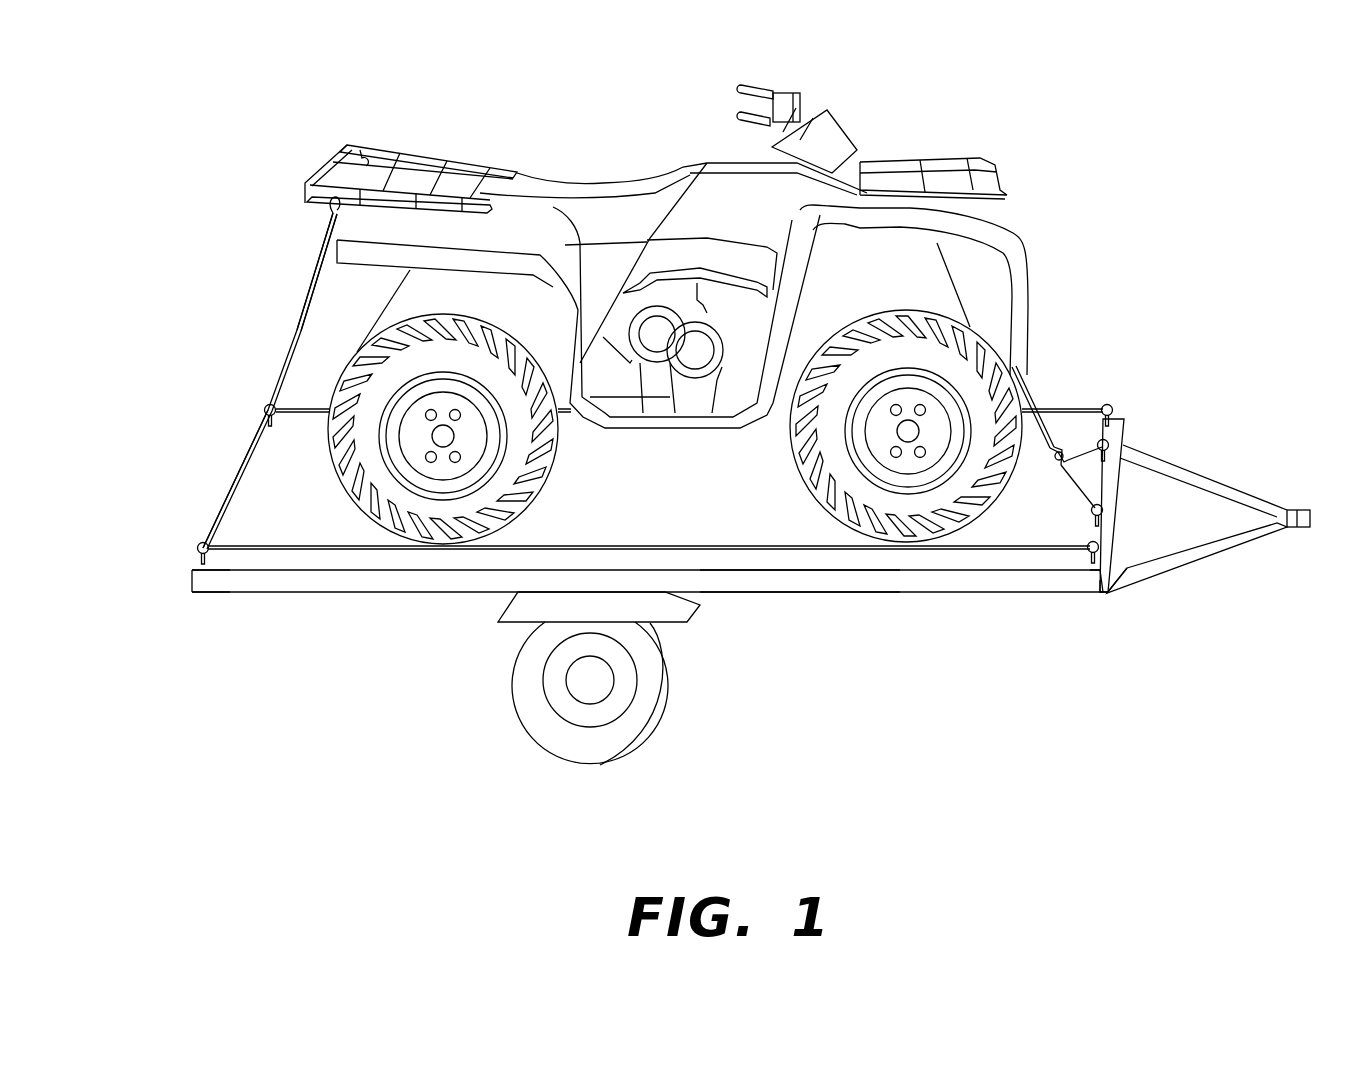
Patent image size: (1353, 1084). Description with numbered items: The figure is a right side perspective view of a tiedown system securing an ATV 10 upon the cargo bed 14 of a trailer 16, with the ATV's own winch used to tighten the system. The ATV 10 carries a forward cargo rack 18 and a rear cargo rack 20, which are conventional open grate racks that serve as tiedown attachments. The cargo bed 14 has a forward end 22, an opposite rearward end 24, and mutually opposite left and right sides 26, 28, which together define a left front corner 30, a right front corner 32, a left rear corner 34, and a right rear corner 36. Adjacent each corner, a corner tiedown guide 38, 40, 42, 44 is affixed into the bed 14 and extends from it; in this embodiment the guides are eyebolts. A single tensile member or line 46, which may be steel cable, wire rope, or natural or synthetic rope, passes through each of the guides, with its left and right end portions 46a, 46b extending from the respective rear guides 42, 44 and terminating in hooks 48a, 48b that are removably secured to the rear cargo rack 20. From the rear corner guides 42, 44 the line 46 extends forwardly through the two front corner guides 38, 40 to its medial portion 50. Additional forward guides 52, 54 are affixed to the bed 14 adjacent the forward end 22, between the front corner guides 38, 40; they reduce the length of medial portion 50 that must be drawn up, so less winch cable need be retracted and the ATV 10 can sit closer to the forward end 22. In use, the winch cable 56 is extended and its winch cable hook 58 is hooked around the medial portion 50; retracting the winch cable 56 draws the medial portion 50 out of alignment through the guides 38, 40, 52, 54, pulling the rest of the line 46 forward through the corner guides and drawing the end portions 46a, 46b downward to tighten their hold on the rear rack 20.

The ATV 10 is at (610, 172).
The cargo bed 14 is at (664, 511).
The trailer 16 is at (1233, 487).
The forward cargo rack 18 is at (890, 160).
The rear cargo rack 20 is at (400, 152).
The forward end 22 is at (1120, 567).
The rearward end 24 is at (215, 522).
The left side 26 is at (1075, 403).
The right side 28 is at (788, 593).
The left front corner 30 is at (1120, 418).
The right front corner 32 is at (1101, 585).
The left rear corner 34 is at (262, 423).
The right rear corner 36 is at (192, 582).
The corner tiedown guide 38 is at (1112, 405).
The corner tiedown guide 40 is at (1087, 575).
The corner tiedown guide 42 is at (263, 407).
The corner tiedown guide 44 is at (197, 548).
The tensile member 46 is at (385, 550).
The left end portion 46a is at (313, 285).
The right end portion 46b is at (292, 327).
The hook 48a is at (362, 150).
The hook 48b is at (327, 207).
The medial portion 50 is at (1100, 480).
The forward guide 52 is at (1122, 428).
The forward guide 54 is at (1105, 537).
The winch cable 56 is at (1023, 368).
The winch cable hook 58 is at (1043, 455).